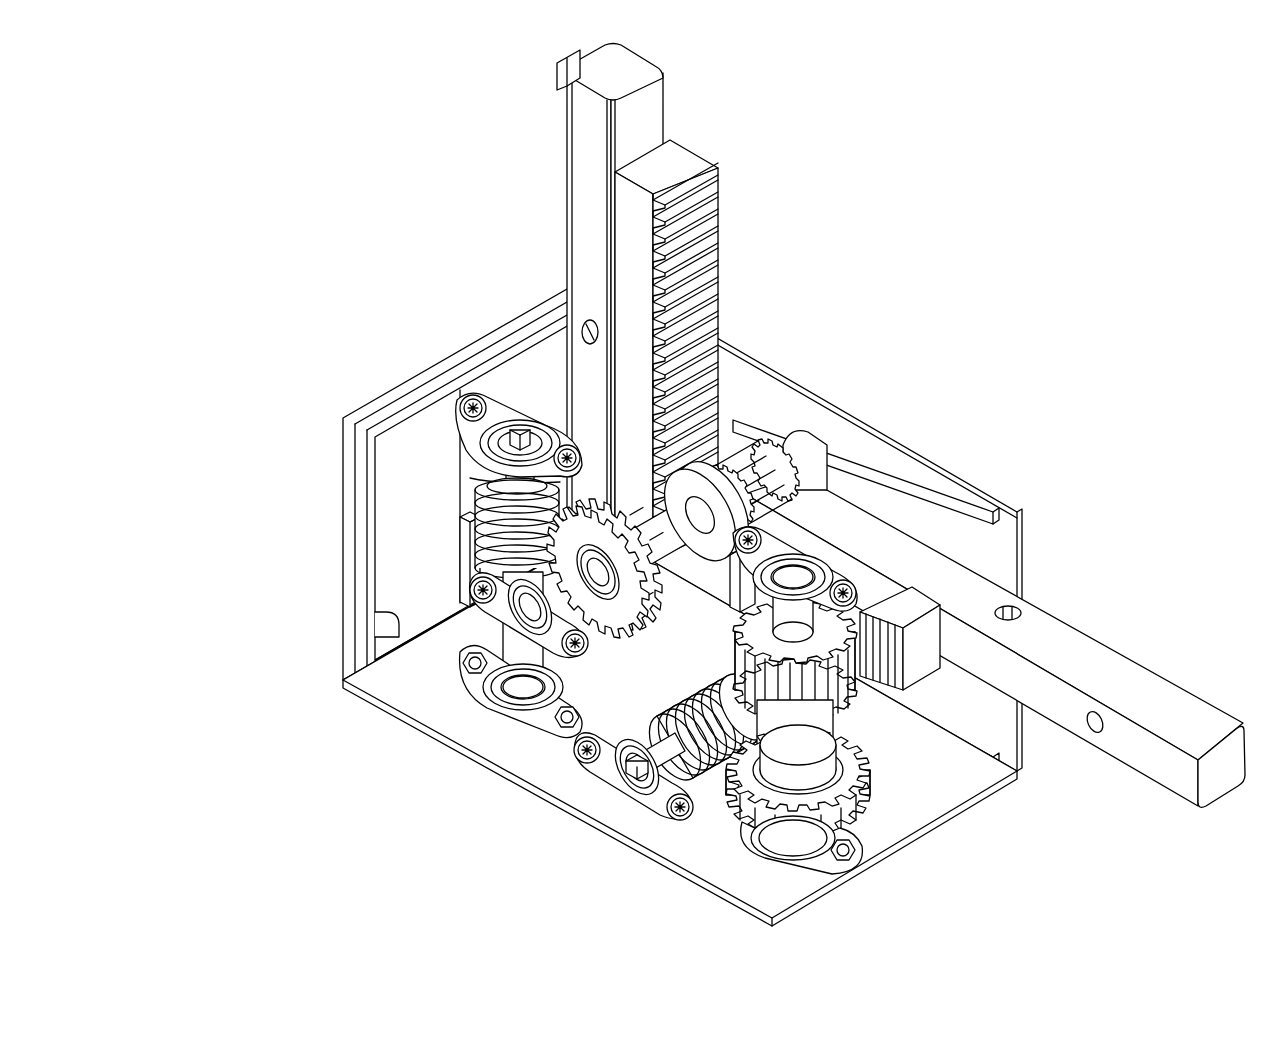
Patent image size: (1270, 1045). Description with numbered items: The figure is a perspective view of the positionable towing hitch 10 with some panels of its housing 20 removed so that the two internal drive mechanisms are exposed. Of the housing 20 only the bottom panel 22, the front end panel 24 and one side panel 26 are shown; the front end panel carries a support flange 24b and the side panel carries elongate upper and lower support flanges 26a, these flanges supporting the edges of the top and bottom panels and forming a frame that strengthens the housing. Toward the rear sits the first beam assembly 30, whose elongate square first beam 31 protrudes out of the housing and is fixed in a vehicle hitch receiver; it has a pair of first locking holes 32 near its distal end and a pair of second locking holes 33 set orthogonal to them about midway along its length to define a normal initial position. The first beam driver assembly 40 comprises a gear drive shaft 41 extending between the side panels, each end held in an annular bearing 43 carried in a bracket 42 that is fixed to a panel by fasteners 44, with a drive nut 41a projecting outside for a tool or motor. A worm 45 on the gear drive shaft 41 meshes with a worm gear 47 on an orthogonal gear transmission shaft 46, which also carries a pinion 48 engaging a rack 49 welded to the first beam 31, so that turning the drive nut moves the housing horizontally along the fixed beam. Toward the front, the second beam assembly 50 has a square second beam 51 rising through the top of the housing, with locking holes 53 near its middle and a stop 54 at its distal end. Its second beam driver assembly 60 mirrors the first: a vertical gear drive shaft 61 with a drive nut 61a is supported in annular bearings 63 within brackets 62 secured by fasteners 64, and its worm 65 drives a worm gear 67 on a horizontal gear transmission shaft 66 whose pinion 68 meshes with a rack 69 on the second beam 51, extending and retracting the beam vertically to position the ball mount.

The positionable towing hitch 10 is at (668, 485).
The housing 20 is at (648, 566).
The bottom panel 22 is at (884, 775).
The front end panel 24 is at (437, 475).
The support flange 24b is at (378, 612).
The side panel 26 is at (811, 535).
The support flanges 26a is at (893, 457).
The first beam assembly 30 is at (1003, 643).
The first beam 31 is at (1193, 722).
The first locking holes 32 is at (1095, 722).
The second locking holes 33 is at (1012, 613).
The first beam driver assembly 40 is at (734, 699).
The gear drive shaft 41 is at (624, 795).
The drive nut 41a is at (637, 770).
The bracket 42 is at (701, 699).
The annular bearing 43 is at (701, 712).
The fasteners 44 is at (697, 712).
The worm 45 is at (690, 700).
The gear transmission shaft 46 is at (779, 632).
The worm gear 47 is at (860, 800).
The pinion 48 is at (857, 707).
The rack 49 is at (935, 637).
The second beam assembly 50 is at (643, 310).
The second beam 51 is at (568, 310).
The locking holes 53 is at (578, 340).
The stop 54 is at (555, 70).
The second beam driver assembly 60 is at (594, 543).
The gear drive shaft 61 is at (470, 492).
The drive nut 61a is at (520, 430).
The bracket 62 is at (634, 543).
The annular bearing 63 is at (634, 526).
The fasteners 64 is at (634, 526).
The worm 65 is at (478, 488).
The gear transmission shaft 66 is at (659, 545).
The worm gear 67 is at (600, 505).
The pinion 68 is at (740, 432).
The rack 69 is at (644, 180).